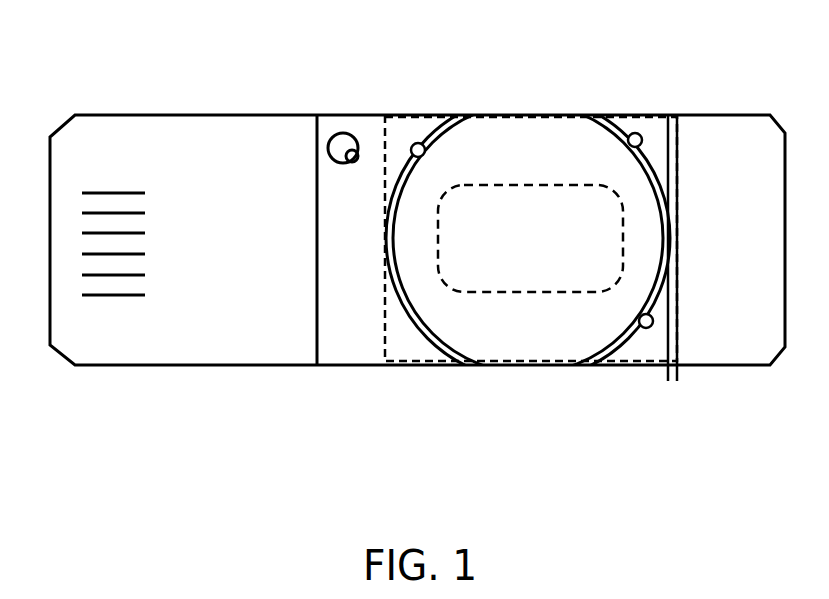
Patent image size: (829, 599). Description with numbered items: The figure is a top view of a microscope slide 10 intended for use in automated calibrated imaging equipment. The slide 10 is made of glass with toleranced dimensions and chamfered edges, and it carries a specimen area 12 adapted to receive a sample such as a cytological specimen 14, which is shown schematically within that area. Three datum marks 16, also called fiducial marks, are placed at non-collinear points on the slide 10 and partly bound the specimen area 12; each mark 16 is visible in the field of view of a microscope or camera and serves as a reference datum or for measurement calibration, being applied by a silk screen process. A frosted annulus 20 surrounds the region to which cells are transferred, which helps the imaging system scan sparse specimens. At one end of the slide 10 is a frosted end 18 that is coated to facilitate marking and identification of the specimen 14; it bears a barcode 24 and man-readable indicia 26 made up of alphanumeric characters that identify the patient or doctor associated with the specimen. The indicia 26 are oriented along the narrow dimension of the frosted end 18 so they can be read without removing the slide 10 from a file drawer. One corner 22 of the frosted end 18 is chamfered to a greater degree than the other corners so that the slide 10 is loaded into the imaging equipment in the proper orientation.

The microscope slide 10 is at (458, 78).
The specimen area 12 is at (540, 138).
The cytological specimen 14 is at (578, 197).
The datum mark 16 is at (418, 142).
The frosted end 18 is at (110, 182).
The frosted annulus 20 is at (393, 247).
The corner 22 is at (60, 362).
The barcode 24 is at (110, 297).
The indicia 26 is at (187, 190).